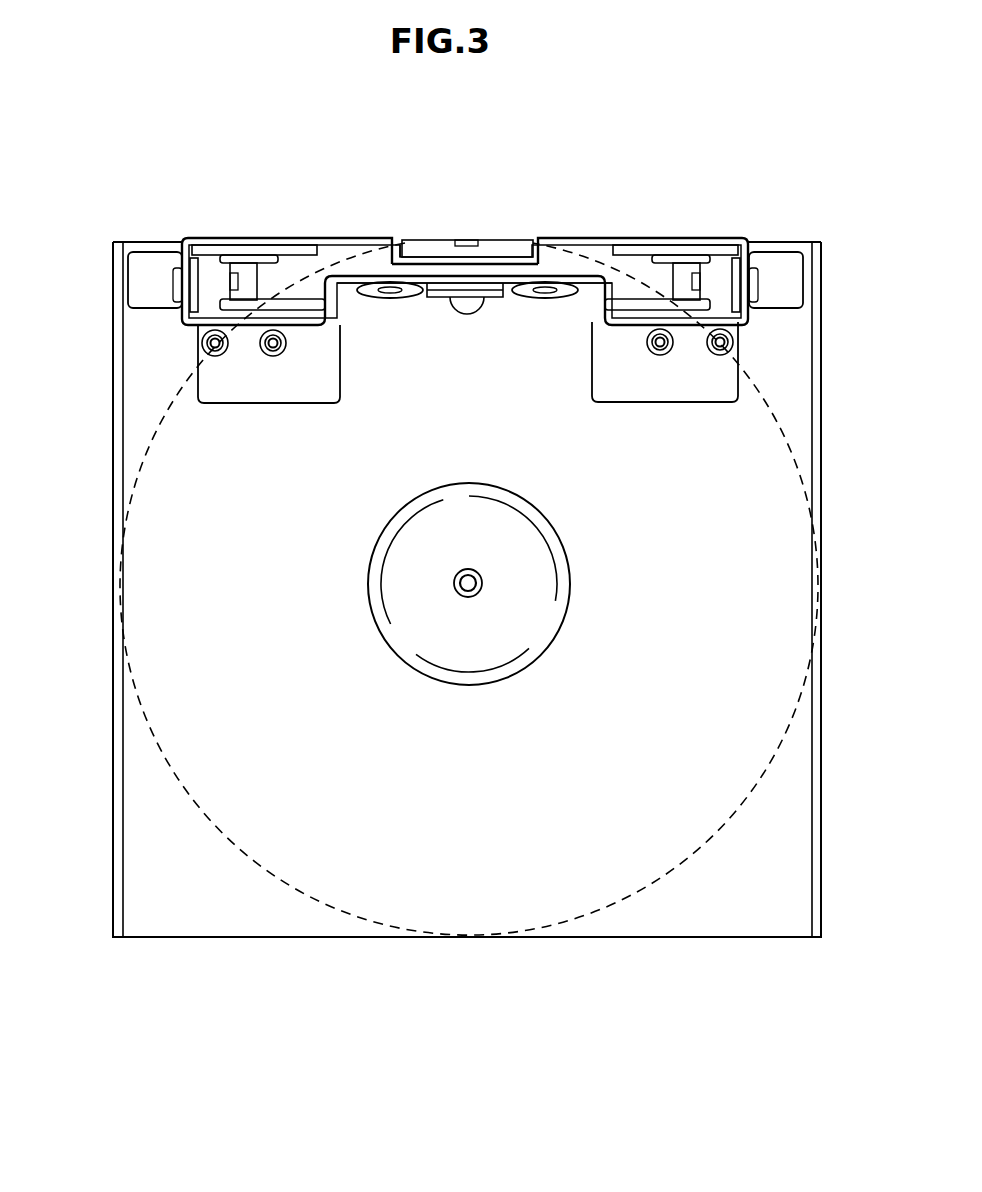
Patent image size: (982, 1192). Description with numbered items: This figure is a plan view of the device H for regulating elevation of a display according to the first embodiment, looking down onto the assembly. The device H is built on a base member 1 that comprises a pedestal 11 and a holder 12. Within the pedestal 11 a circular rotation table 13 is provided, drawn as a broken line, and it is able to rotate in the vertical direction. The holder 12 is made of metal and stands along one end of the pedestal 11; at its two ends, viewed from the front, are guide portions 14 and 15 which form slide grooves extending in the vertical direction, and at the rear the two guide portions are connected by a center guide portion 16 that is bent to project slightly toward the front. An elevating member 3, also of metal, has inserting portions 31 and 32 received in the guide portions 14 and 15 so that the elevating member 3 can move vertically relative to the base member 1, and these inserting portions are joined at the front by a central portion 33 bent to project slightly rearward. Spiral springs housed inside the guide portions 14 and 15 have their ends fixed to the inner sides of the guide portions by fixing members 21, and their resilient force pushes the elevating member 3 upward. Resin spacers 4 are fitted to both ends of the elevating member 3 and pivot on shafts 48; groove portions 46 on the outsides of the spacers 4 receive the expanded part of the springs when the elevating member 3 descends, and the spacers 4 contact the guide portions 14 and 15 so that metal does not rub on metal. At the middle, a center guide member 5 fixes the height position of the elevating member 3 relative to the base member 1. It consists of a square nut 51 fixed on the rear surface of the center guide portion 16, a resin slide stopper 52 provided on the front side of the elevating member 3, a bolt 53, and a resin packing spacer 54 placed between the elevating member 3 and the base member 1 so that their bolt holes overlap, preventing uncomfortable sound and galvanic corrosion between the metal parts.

The base member 1 is at (328, 233).
The elevating member 3 is at (562, 268).
The spacer 4 is at (211, 257).
The center guide member 5 is at (485, 239).
The pedestal 11 is at (172, 905).
The holder 12 is at (758, 224).
The circular rotation table 13 is at (468, 905).
The guide portion 14 is at (283, 244).
The guide portion 15 is at (623, 242).
The center guide portion 16 is at (412, 250).
The fixing member 21 is at (178, 283).
The inserting portion 31 is at (192, 315).
The inserting portion 32 is at (745, 308).
The central portion 33 is at (507, 298).
The groove portion 46 is at (190, 261).
The shaft 48 is at (250, 276).
The square nut 51 is at (438, 243).
The slide stopper 52 is at (433, 302).
The bolt 53 is at (466, 314).
The packing spacer 54 is at (504, 263).
The device for regulating elevation of a display H is at (706, 107).